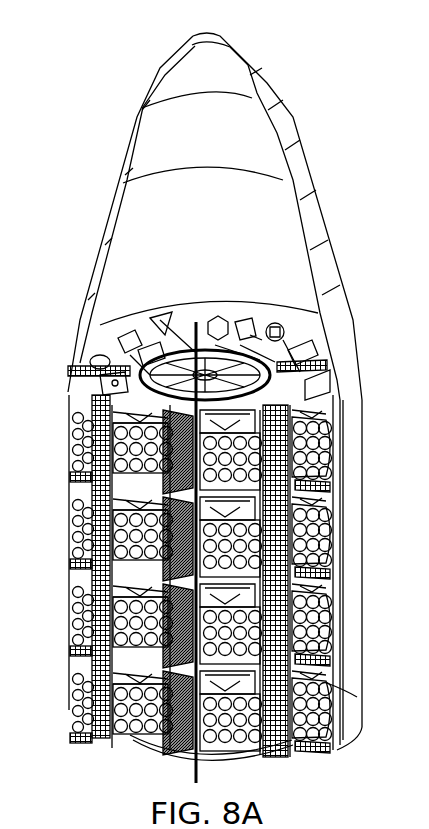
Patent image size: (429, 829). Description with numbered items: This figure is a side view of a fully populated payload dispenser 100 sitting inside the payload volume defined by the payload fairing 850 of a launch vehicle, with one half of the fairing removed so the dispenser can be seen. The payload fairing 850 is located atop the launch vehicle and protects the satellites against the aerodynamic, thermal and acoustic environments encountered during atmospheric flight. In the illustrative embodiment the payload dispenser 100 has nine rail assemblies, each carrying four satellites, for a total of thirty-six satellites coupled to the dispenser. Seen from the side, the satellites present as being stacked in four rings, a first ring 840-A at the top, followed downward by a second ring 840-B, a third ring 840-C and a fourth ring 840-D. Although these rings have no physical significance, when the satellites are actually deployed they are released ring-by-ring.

The payload dispenser 100 is at (238, 523).
The payload fairing 850 is at (318, 260).
The first ring of satellites 840-A is at (333, 433).
The second ring of satellites 840-B is at (333, 525).
The third ring of satellites 840-C is at (333, 605).
The fourth ring of satellites 840-D is at (333, 695).